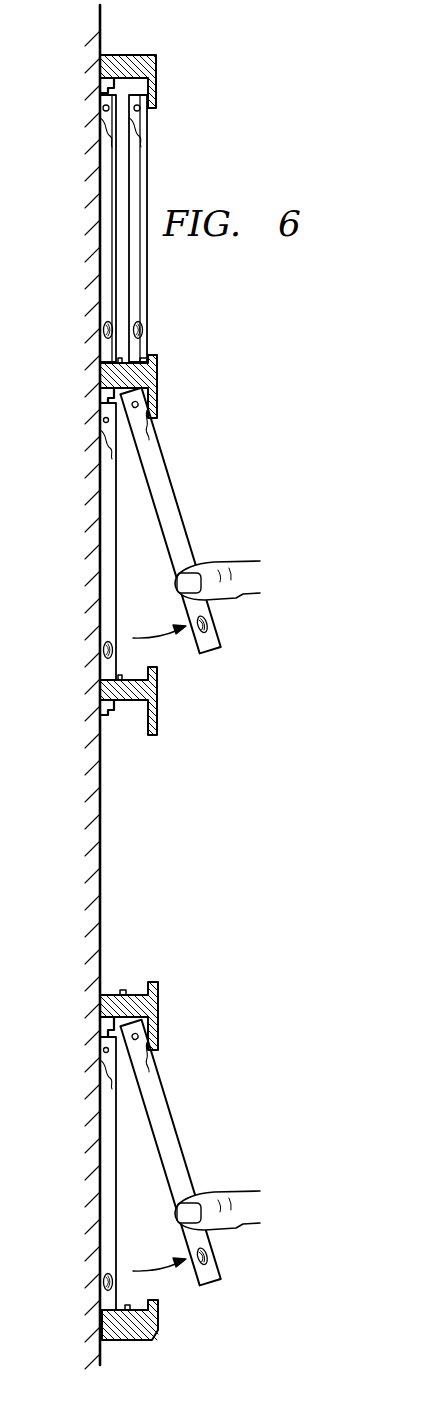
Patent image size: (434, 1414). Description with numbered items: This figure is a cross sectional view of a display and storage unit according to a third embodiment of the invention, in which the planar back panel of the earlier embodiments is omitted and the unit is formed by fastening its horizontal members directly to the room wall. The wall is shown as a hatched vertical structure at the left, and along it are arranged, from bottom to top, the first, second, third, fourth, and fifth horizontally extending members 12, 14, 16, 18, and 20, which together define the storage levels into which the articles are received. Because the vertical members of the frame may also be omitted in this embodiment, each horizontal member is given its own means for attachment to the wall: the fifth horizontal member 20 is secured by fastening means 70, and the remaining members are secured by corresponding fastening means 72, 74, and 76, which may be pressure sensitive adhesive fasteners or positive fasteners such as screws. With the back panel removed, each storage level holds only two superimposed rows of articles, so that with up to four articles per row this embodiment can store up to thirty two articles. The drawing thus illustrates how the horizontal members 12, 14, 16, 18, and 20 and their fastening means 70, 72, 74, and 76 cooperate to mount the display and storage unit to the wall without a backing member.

The first horizontally extending member 12 is at (160, 1325).
The second horizontally extending member 14 is at (157, 1013).
The third horizontally extending member 16 is at (158, 707).
The fourth horizontally extending member 18 is at (157, 376).
The fifth horizontally extending member 20 is at (126, 55).
The fastening means 70 is at (98, 78).
The fastening means 72 is at (100, 394).
The fastening means 74 is at (104, 714).
The fastening means 76 is at (100, 1023).